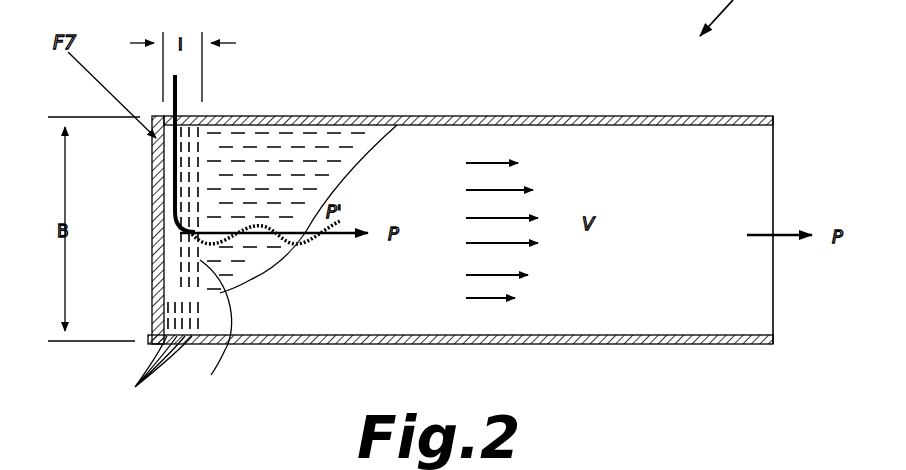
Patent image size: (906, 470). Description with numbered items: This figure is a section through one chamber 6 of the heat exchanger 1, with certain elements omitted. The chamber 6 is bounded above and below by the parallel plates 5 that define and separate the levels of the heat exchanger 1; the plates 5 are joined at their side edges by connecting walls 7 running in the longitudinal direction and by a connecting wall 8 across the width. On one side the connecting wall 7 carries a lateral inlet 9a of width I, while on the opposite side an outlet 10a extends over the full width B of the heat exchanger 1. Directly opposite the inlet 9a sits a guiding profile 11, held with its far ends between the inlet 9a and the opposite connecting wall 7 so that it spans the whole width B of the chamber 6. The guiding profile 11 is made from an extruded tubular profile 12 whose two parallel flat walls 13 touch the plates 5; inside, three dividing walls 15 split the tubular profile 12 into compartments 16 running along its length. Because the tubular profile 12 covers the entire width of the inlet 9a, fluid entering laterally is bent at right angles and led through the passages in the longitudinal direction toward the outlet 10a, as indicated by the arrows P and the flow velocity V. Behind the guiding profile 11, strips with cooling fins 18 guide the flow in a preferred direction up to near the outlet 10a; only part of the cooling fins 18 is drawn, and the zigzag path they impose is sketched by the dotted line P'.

The heat exchanger 1 is at (784, 468).
The parallel plates 5 is at (707, 133).
The chambers 6 is at (327, 313).
The connecting walls 7 is at (390, 128).
The connecting wall 8 is at (151, 185).
The lateral inlet 9a is at (203, 117).
The outlet 10a is at (773, 167).
The guiding profile 11 is at (183, 284).
The tubular profile 12 is at (211, 334).
The flat walls 13 is at (166, 233).
The dividing walls 15 is at (170, 250).
The compartments 16 is at (148, 375).
The cooling fins 18 is at (313, 138).